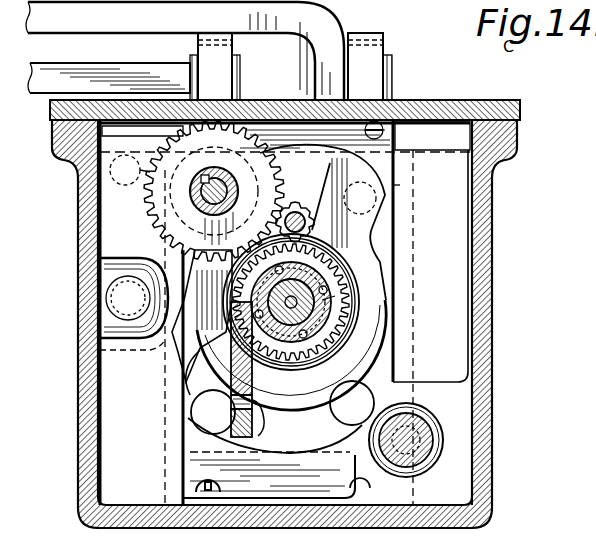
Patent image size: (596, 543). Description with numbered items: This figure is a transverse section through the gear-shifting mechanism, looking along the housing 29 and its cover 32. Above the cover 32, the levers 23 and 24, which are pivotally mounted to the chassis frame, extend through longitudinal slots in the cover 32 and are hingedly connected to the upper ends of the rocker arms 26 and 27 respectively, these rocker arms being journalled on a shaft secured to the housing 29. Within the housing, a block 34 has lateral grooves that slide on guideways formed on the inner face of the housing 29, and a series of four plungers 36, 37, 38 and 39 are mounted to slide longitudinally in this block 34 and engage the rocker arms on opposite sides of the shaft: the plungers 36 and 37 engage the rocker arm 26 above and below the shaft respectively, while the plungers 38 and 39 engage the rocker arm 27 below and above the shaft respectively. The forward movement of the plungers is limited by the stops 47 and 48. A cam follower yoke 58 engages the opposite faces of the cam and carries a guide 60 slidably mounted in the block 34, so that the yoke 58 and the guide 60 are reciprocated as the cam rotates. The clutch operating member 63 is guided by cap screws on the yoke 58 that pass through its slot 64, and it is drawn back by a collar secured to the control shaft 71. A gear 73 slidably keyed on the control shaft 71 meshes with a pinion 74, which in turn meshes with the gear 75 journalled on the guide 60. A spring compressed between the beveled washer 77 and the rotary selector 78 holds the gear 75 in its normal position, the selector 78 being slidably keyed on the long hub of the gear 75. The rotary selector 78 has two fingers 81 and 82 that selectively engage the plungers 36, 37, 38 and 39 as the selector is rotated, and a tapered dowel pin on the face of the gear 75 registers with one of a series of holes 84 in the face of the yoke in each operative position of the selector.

The lever 23 is at (185, 51).
The lever 24 is at (80, 76).
The rocker arm 26 is at (370, 66).
The rocker arm 27 is at (215, 66).
The housing 29 is at (478, 194).
The cover 32 is at (478, 110).
The block 34 is at (274, 418).
The plunger 36 is at (360, 198).
The plunger 37 is at (386, 429).
The plunger 38 is at (210, 392).
The plunger 39 is at (130, 170).
The stop 47 is at (396, 152).
The stop 48 is at (276, 475).
The cam follower yoke 58 is at (335, 300).
The guide 60 is at (300, 296).
The clutch operating member 63 is at (254, 382).
The slot 64 is at (256, 436).
The control shaft 71 is at (193, 196).
The gear 73 is at (214, 191).
The pinion 74 is at (292, 210).
The gear 75 is at (322, 258).
The beveled washer 77 is at (330, 272).
The rotary selector 78 is at (386, 336).
The finger 81 is at (395, 185).
The finger 82 is at (202, 316).
The holes 84 is at (312, 284).